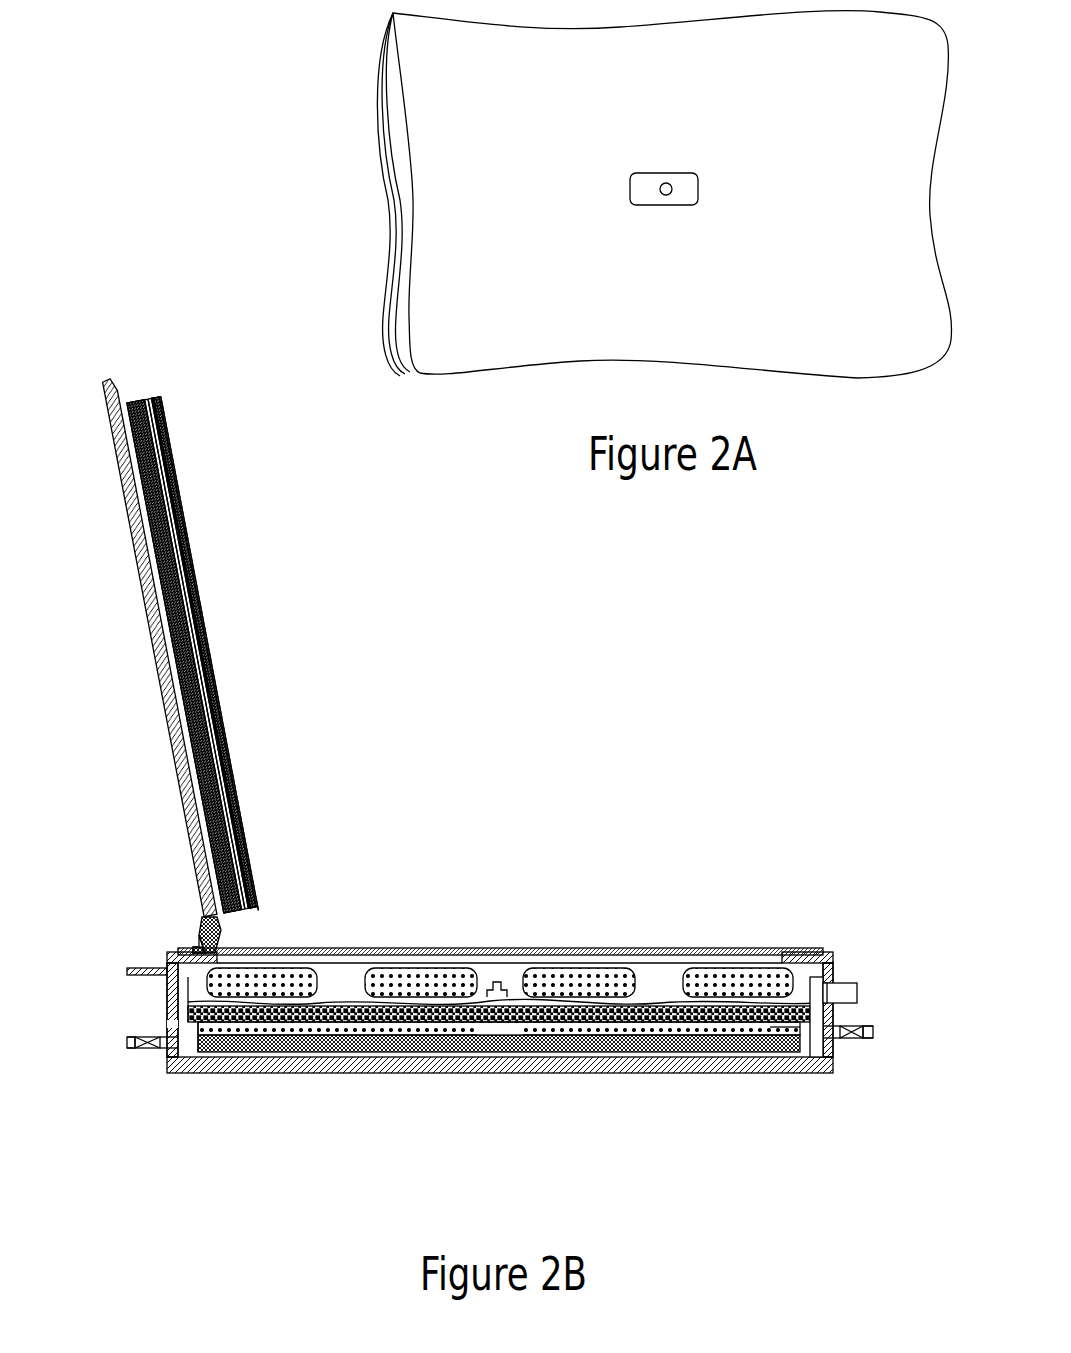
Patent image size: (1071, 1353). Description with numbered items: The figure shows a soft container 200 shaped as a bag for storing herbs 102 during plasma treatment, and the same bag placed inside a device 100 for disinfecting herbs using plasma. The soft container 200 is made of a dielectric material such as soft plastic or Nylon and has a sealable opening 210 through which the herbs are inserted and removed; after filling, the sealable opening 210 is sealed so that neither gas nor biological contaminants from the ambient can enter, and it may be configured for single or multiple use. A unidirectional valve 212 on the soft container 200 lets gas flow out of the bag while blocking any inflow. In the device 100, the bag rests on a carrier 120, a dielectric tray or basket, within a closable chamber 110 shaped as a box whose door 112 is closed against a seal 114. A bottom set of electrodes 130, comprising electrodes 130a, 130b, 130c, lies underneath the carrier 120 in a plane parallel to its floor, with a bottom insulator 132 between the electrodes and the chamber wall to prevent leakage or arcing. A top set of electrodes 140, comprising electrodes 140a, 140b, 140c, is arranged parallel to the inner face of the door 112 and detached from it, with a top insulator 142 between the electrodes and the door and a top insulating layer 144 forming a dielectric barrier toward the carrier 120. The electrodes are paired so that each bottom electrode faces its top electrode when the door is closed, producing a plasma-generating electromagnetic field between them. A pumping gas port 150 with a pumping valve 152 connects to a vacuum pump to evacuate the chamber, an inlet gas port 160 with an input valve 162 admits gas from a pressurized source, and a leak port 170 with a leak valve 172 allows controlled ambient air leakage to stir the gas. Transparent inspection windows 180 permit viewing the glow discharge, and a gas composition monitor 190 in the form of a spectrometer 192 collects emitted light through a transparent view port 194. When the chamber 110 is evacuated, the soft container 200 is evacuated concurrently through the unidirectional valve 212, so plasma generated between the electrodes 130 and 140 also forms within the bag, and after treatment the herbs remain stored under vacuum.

In FIG. 2B, the device 100 is at (572, 613).
In FIG. 2B, the herbs 102 is at (650, 1000).
In FIG. 2B, the closable chamber 110 is at (808, 953).
In FIG. 2B, the door 112 is at (163, 672).
In FIG. 2B, the seal 114 is at (782, 953).
In FIG. 2B, the carrier 120 is at (175, 977).
In FIG. 2B, the bottom set of electrodes 130 is at (192, 1028).
In FIG. 2B, the bottom electrode 130a is at (225, 1030).
In FIG. 2B, the bottom electrode 130b is at (413, 1020).
In FIG. 2B, the bottom electrode 130c is at (770, 1027).
In FIG. 2B, the bottom insulator 132 is at (513, 1047).
In FIG. 2B, the top set of electrodes 140 is at (143, 391).
In FIG. 2B, the top electrode 140a is at (188, 570).
In FIG. 2B, the top electrode 140b is at (213, 740).
In FIG. 2B, the top electrode 140c is at (217, 750).
In FIG. 2B, the top insulator 142 is at (192, 645).
In FIG. 2B, the top insulating layer 144 is at (188, 578).
In FIG. 2B, the pumping gas port 150 is at (147, 1052).
In FIG. 2B, the pumping valve 152 is at (130, 1043).
In FIG. 2B, the inlet gas port 160 is at (852, 1043).
In FIG. 2B, the input valve 162 is at (870, 1037).
In FIG. 2B, the leak port 170 is at (133, 968).
In FIG. 2B, the leak valve 172 is at (127, 970).
In FIG. 2B, the transparent inspection windows 180 is at (290, 975).
In FIG. 2B, the gas composition monitor 190 is at (858, 993).
In FIG. 2B, the spectrometer 192 is at (853, 987).
In FIG. 2B, the transparent view port 194 is at (845, 983).
In FIG. 2A, the soft container 200 is at (825, 86).
In FIG. 2A, the sealable opening 210 is at (395, 107).
In FIG. 2A, the unidirectional valve 212 is at (665, 173).